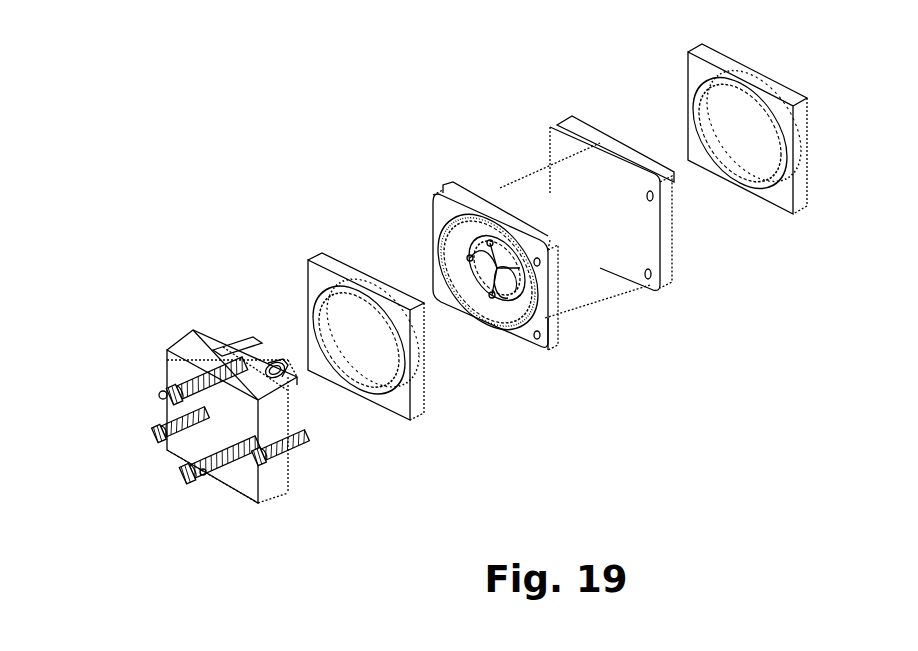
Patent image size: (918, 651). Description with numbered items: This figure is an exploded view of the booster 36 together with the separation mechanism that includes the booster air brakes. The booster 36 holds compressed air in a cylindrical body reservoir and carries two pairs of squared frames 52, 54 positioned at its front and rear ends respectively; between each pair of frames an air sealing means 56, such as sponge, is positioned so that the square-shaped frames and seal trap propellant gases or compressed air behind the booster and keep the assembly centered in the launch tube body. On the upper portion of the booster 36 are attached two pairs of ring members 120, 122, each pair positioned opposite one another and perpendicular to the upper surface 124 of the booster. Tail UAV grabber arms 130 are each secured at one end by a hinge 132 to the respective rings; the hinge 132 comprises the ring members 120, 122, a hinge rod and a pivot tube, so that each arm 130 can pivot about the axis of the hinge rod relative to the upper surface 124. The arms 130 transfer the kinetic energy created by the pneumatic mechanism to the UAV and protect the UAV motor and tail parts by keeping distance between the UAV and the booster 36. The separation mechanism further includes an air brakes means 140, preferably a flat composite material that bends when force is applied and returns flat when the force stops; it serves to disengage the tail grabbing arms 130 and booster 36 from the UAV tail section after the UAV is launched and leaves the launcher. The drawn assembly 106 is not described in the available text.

The booster 36 is at (545, 221).
The squared frame 52 is at (420, 215).
The squared frame 54 is at (620, 140).
The air sealing means 56 is at (800, 155).
The connector assembly 106 is at (231, 366).
The ring member 120 is at (470, 258).
The ring member 122 is at (490, 243).
The upper surface 124 is at (463, 278).
The tail UAV grabber arm 130 is at (163, 395).
The hinge 132 is at (295, 405).
The air brakes means 140 is at (165, 368).